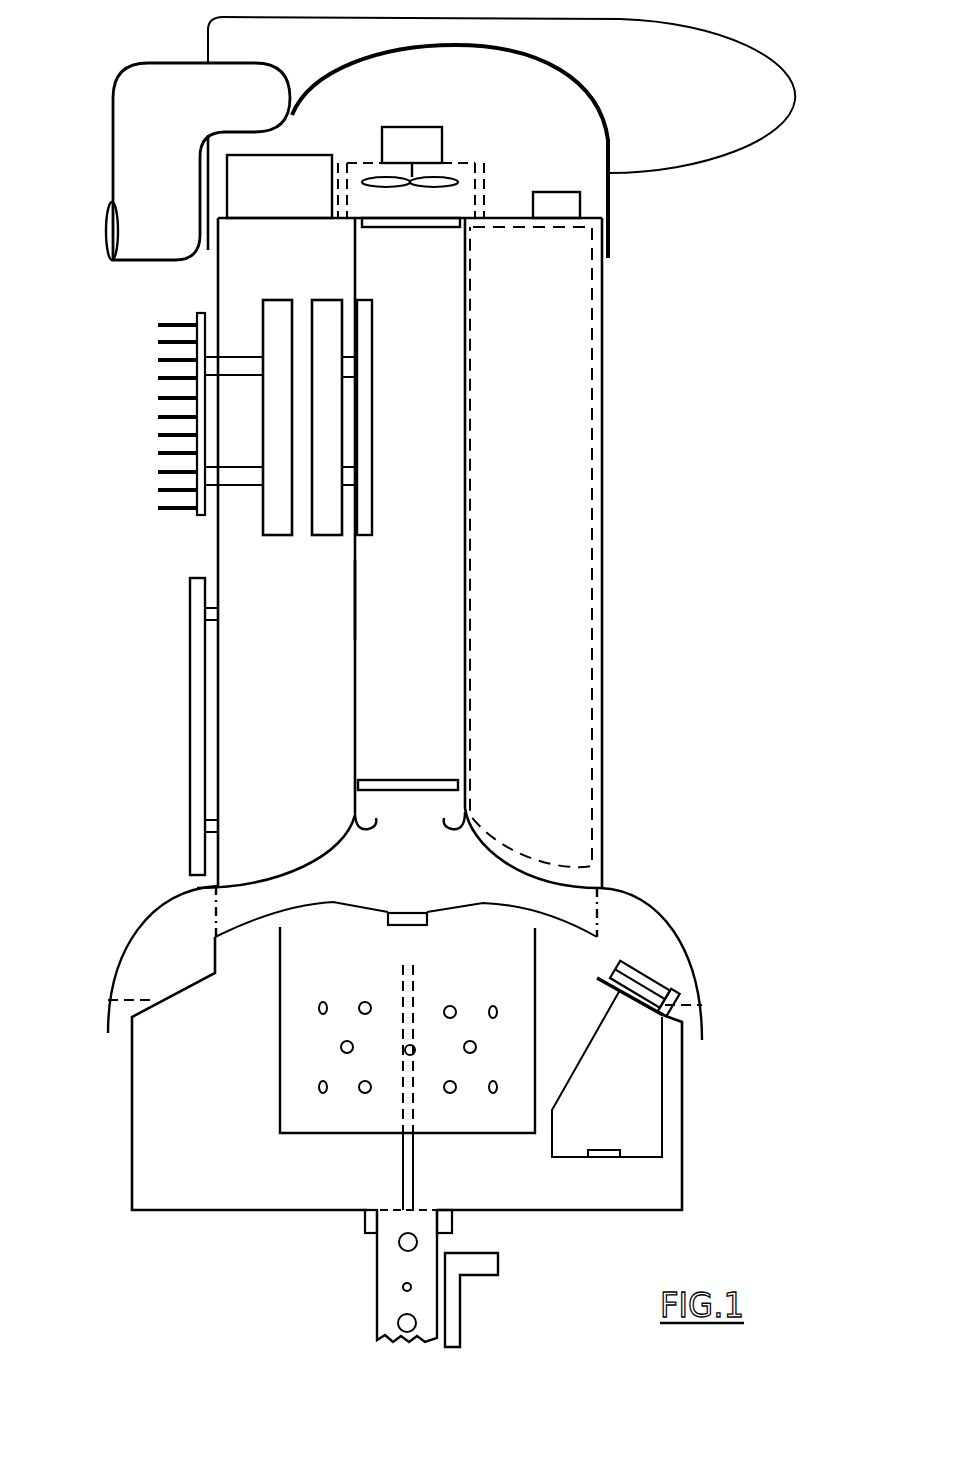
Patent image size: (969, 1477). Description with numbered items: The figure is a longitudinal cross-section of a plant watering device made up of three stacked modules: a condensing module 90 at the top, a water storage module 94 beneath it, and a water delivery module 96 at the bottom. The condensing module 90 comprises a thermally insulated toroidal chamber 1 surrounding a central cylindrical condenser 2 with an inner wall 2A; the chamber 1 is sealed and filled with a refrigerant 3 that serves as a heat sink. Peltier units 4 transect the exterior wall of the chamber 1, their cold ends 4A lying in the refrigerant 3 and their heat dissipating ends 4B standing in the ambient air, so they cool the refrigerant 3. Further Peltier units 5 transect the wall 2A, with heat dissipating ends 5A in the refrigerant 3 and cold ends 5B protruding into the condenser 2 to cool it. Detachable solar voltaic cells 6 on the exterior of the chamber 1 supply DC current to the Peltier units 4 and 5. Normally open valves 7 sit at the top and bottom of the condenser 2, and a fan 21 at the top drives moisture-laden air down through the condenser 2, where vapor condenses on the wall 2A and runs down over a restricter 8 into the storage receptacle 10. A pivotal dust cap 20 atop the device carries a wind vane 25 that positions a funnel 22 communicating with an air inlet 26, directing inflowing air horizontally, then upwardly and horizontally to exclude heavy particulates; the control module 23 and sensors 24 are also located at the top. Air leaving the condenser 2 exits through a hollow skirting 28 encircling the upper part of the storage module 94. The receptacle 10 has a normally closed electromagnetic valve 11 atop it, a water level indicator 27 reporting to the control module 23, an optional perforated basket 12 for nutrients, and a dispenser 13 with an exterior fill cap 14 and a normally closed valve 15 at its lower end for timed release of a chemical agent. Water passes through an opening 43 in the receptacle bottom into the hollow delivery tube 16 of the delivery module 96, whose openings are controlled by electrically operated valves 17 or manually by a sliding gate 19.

The toroidal chamber 1 is at (604, 347).
The condenser 2 is at (452, 490).
The inner wall 2A is at (357, 603).
The refrigerant 3 is at (565, 488).
The Peltier units 4 is at (222, 368).
The cold ends 4A is at (270, 443).
The heat dissipating ends 4B is at (163, 353).
The Peltier units 5 is at (349, 473).
The heat dissipating ends 5A is at (332, 423).
The cold ends 5B is at (365, 490).
The solar voltaic cells 6 is at (197, 730).
The valves 7 is at (420, 230).
The restricter 8 is at (440, 826).
The storage receptacle 10 is at (142, 1080).
The electromagnetic valve 11 is at (413, 925).
The perforated basket 12 is at (290, 1113).
The dispenser 13 is at (650, 1082).
The fill cap 14 is at (636, 982).
The valve 15 is at (602, 1150).
The delivery tube 16 is at (380, 1285).
The valve 17 is at (417, 1245).
The sliding gate 19 is at (457, 1310).
The dust cap 20 is at (613, 207).
The fan 21 is at (420, 137).
The funnel 22 is at (108, 230).
The control module 23 is at (292, 163).
The sensors 24 is at (558, 190).
The wind vane 25 is at (785, 97).
The air inlet 26 is at (118, 122).
The water level indicator 27 is at (403, 1165).
The hollow skirting 28 is at (687, 987).
The opening 43 is at (385, 1213).
The condensing module 90 is at (652, 424).
The water storage module 94 is at (752, 1128).
The water delivery module 96 is at (523, 1290).